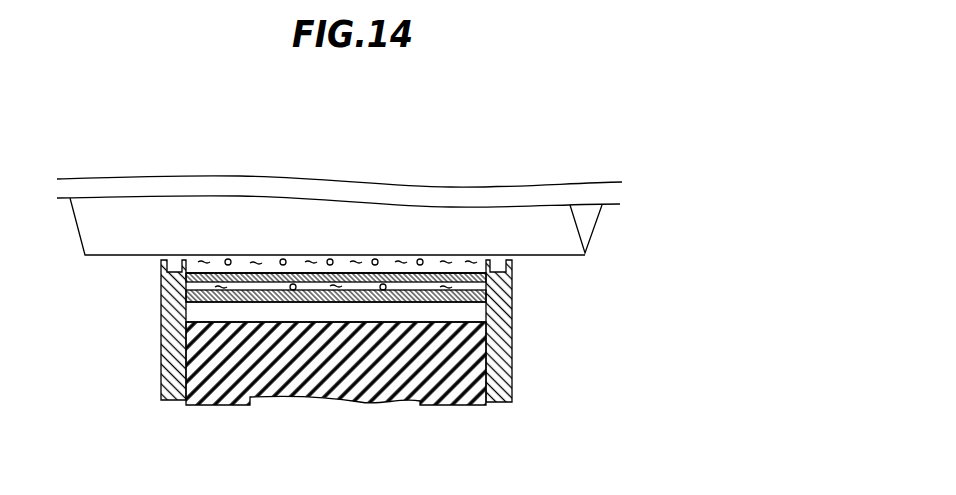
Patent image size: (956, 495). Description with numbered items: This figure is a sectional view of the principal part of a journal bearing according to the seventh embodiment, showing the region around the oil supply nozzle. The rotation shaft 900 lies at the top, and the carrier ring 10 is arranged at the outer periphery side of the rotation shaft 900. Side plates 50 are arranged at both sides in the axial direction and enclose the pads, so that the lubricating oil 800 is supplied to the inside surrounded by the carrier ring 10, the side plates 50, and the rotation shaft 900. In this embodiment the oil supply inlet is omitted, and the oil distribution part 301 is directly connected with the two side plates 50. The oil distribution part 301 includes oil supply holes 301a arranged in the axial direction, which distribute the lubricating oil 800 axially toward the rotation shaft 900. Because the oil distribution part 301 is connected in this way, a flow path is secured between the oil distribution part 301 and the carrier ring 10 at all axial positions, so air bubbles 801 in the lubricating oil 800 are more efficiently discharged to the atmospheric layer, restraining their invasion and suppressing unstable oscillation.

The rotation shaft 900 is at (547, 227).
The carrier ring 10 is at (455, 405).
The side plate 50 is at (162, 342).
The oil distribution part 301 is at (385, 273).
The oil supply hole 301a is at (302, 270).
The lubricating oil 800 is at (255, 260).
The air bubbles 801 is at (228, 259).